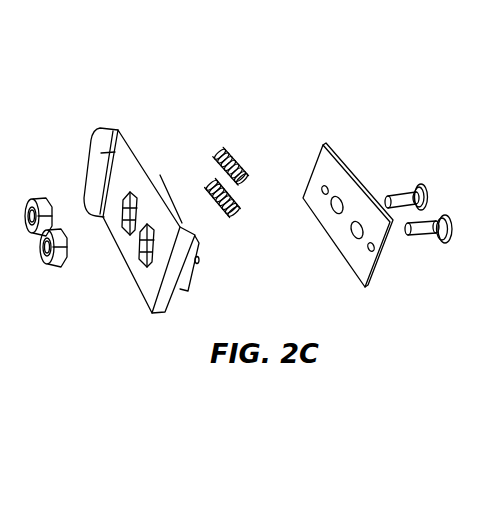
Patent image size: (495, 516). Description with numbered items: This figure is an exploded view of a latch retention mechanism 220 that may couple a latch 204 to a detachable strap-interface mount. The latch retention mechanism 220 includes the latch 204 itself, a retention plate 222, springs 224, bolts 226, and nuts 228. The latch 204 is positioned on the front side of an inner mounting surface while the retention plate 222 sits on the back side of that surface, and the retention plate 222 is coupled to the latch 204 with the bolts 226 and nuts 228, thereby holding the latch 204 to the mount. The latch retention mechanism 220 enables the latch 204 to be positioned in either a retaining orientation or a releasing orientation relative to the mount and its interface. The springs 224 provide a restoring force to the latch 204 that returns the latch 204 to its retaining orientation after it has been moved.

The latch retention mechanism 220 is at (342, 35).
The latch 204 is at (137, 282).
The retention plate 222 is at (335, 243).
The springs 224 is at (250, 123).
The bolts 226 is at (473, 147).
The nuts 228 is at (70, 163).